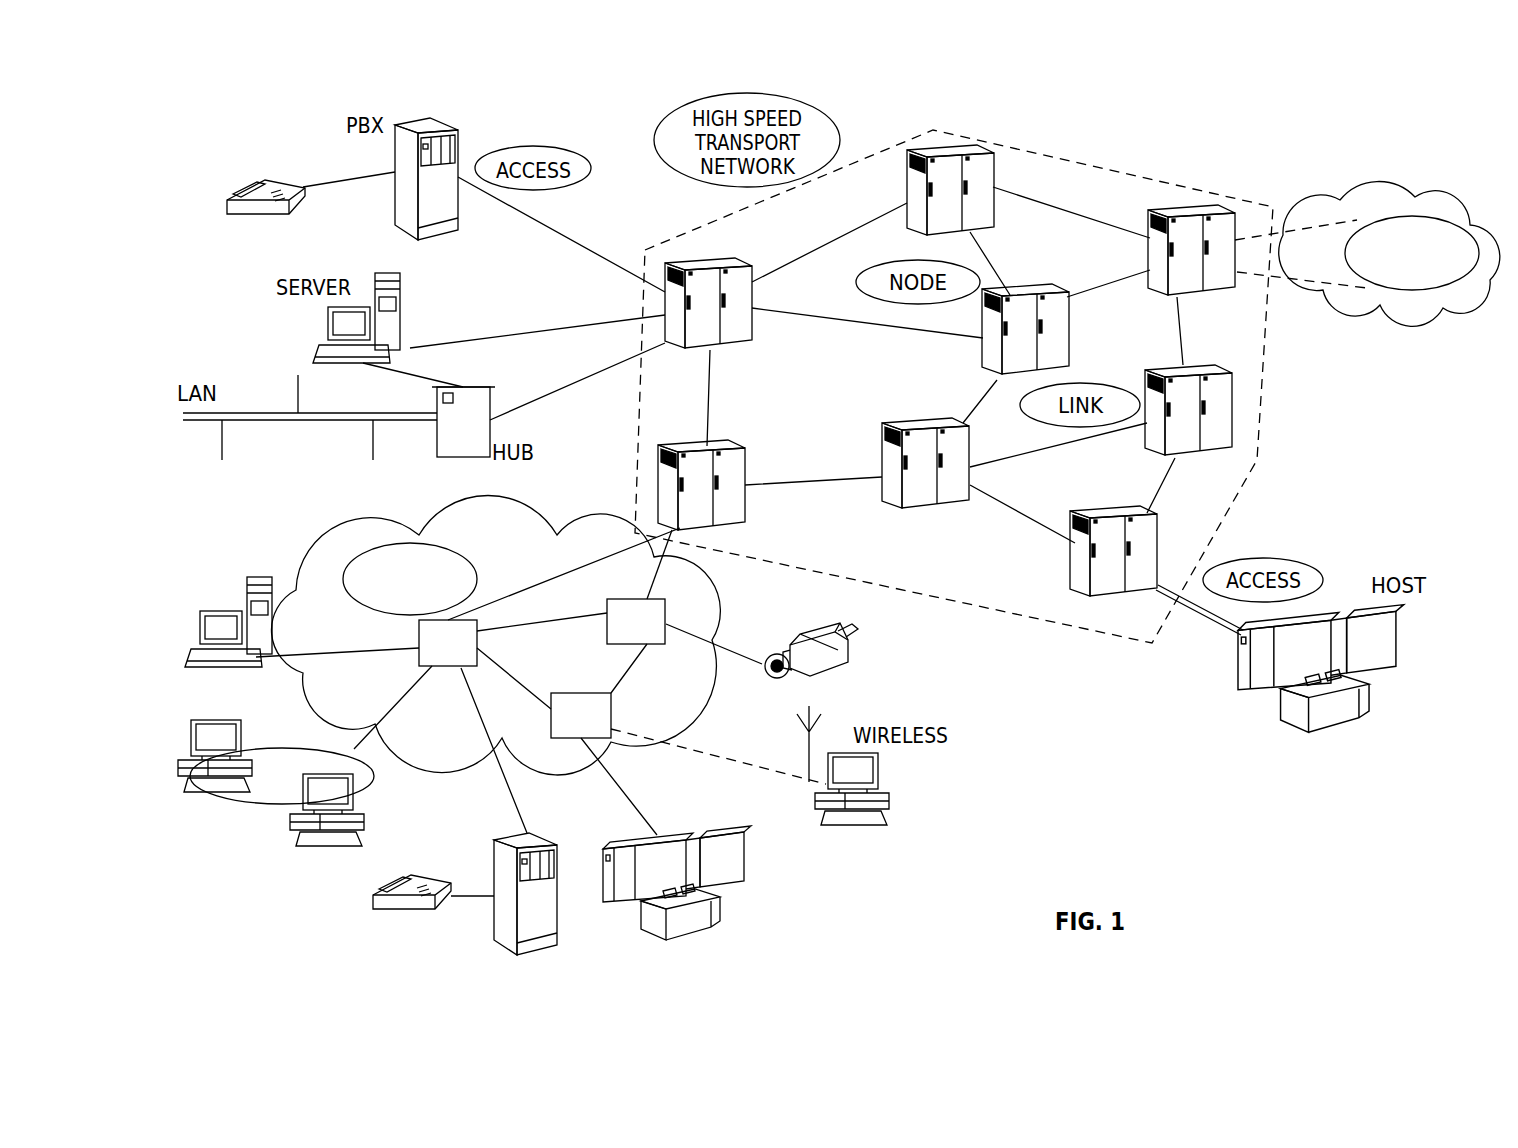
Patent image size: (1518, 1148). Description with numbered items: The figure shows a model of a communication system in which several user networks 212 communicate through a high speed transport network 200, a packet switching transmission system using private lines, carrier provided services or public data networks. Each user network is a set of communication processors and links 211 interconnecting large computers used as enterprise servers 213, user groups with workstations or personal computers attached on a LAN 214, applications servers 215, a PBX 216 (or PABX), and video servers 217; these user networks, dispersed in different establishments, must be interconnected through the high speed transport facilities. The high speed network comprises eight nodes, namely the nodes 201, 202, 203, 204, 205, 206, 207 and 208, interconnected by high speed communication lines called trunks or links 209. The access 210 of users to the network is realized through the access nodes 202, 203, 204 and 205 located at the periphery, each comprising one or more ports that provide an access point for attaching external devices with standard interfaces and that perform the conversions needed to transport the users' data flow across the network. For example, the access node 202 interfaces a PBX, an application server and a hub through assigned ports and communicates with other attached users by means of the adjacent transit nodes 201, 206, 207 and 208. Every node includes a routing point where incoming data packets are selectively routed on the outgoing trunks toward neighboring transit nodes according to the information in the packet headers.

The high speed transport network 200 is at (697, 230).
The transit node 201 is at (993, 172).
The access node 202 is at (707, 265).
The access node 203 is at (1100, 513).
The access node 204 is at (1202, 295).
The access node 205 is at (747, 512).
The transit node 206 is at (942, 512).
The transit node 207 is at (1188, 457).
The transit node 208 is at (1022, 293).
The link 209 is at (1102, 287).
The access 210 is at (520, 213).
The user network communication processors and links 211 is at (441, 504).
The user network 212 is at (1332, 195).
The enterprise server 213 is at (746, 849).
The LAN 214 is at (287, 747).
The application server 215 is at (203, 632).
The PBX 216 is at (494, 947).
The video server 217 is at (816, 628).